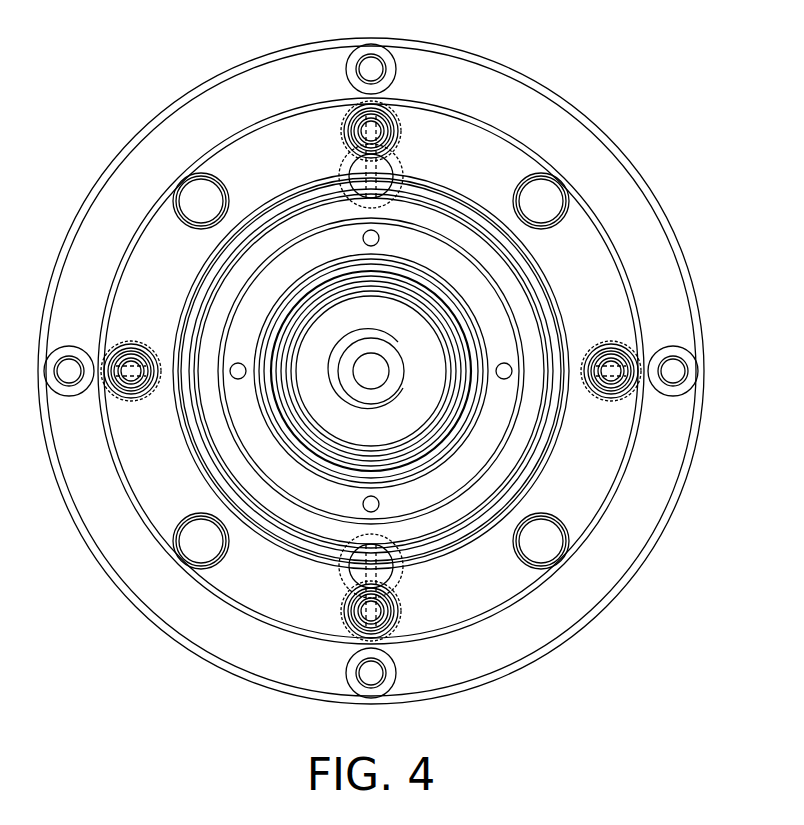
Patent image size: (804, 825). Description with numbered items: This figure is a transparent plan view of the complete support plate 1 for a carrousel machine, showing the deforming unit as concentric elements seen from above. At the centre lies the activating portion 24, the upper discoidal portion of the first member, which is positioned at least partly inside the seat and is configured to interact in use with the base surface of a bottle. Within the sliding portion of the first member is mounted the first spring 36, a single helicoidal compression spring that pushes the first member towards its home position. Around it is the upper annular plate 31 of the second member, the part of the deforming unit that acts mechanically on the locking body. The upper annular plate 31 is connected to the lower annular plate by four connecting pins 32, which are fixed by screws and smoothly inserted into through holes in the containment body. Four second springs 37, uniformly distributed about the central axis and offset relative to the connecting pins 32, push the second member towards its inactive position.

The support plate 1 is at (664, 116).
The activating portion 24 is at (402, 502).
The upper annular plate 31 is at (520, 637).
The connecting pins 32 is at (383, 128).
The first spring 36 is at (430, 423).
The second spring 37 is at (571, 200).